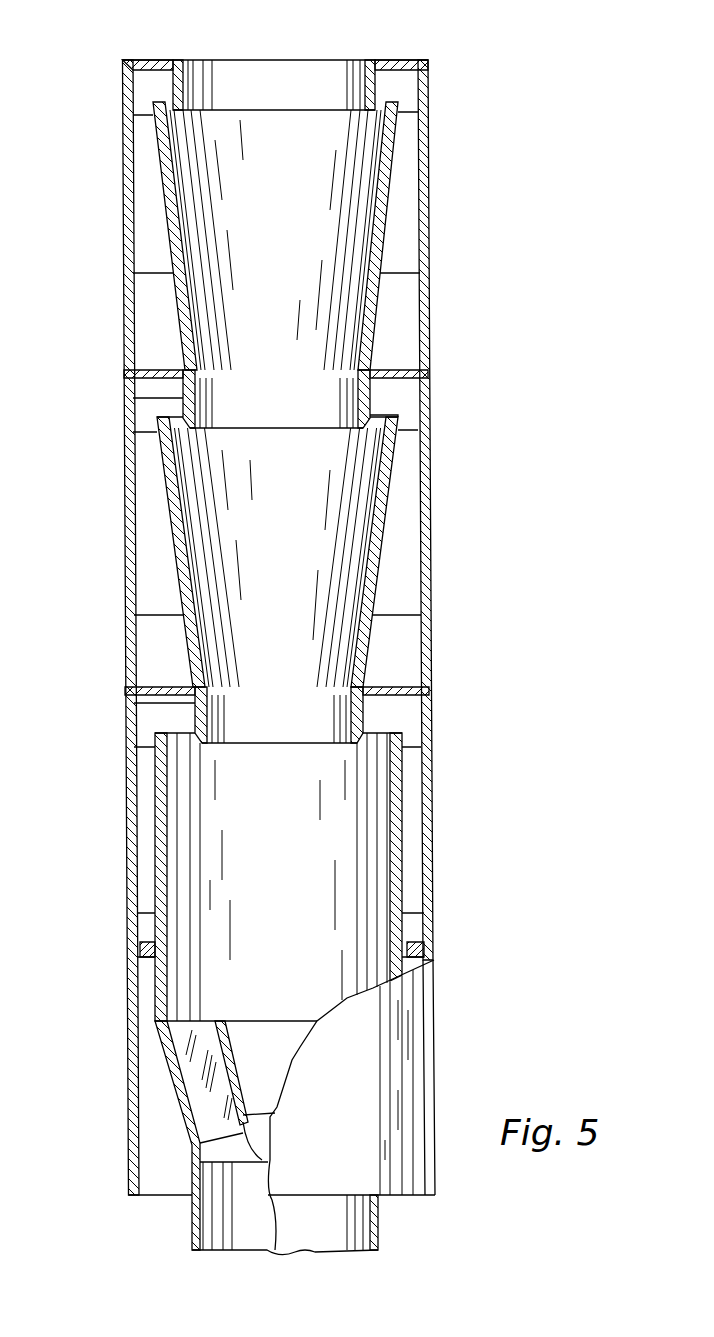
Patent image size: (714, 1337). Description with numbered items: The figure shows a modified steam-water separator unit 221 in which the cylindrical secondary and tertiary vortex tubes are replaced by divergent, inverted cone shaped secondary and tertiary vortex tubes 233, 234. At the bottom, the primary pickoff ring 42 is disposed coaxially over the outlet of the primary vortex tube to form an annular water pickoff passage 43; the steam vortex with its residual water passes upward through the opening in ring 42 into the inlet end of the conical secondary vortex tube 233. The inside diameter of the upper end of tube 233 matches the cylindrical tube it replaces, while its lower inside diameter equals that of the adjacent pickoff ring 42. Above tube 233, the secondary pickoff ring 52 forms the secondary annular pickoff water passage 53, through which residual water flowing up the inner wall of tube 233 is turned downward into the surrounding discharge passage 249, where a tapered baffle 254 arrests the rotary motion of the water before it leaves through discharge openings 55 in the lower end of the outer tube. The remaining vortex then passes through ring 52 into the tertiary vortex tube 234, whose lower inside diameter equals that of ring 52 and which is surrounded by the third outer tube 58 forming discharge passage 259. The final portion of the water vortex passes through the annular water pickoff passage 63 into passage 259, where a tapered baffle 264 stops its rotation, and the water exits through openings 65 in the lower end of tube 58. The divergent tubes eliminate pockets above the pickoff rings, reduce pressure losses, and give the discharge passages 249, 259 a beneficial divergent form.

The separator unit 221 is at (513, 97).
The annular water pickoff passage 63 is at (168, 100).
The tapered baffle 264 is at (140, 211).
The openings 65 is at (127, 362).
The secondary pickoff ring 52 is at (177, 400).
The secondary annular pickoff water passage 53 is at (165, 417).
The tapered baffle 254 is at (145, 523).
The discharge openings 55 is at (127, 680).
The primary pickoff ring 42 is at (193, 705).
The annular water pickoff passage 43 is at (177, 732).
The tertiary vortex tube 234 is at (390, 203).
The third outer tube 58 is at (430, 285).
The discharge passage 259 is at (410, 325).
The secondary vortex tube 233 is at (387, 518).
The discharge passage 249 is at (398, 653).